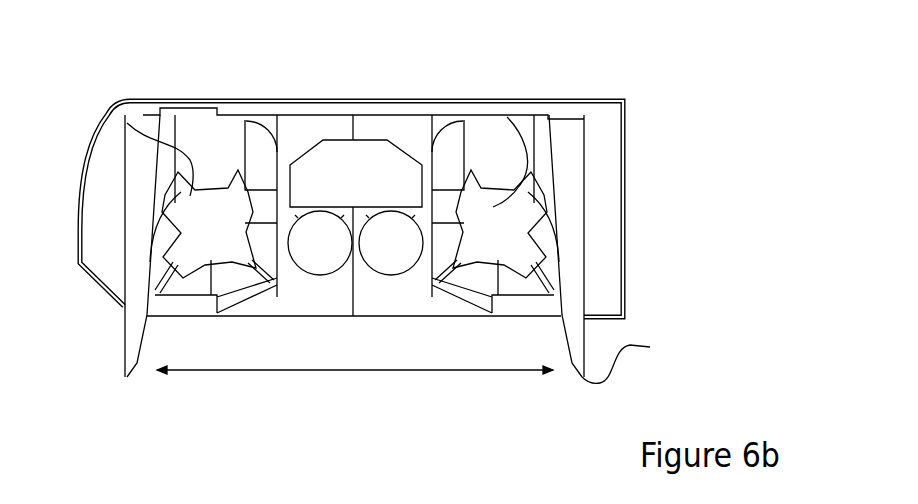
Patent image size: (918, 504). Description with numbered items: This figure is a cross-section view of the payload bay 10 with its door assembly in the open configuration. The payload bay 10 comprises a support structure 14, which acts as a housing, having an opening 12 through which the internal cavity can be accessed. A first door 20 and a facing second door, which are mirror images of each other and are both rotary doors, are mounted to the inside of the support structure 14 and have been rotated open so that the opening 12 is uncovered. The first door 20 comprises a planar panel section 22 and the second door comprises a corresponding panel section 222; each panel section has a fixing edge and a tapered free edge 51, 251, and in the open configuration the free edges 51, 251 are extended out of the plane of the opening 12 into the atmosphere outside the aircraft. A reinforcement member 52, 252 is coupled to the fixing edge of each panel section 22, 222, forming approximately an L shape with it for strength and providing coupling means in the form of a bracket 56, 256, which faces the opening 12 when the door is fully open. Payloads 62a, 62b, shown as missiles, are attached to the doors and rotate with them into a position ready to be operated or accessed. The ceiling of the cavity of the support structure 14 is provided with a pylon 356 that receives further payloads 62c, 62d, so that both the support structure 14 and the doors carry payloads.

The payload bay 10 is at (680, 94).
The opening 12 is at (355, 389).
The support structure 14 is at (607, 283).
The first door 20 is at (582, 186).
The panel section 22 is at (577, 235).
The free edge 51 is at (629, 359).
The reinforcement member 52 is at (583, 111).
The bracket 56 is at (480, 140).
The payload 62a is at (113, 118).
The payload 62b is at (507, 117).
The payload 62c is at (305, 278).
The payload 62d is at (383, 278).
The panel section 222 is at (130, 210).
The free edge 251 is at (125, 377).
The reinforcement member 252 is at (260, 162).
The bracket 256 is at (200, 140).
The pylon 356 is at (350, 163).